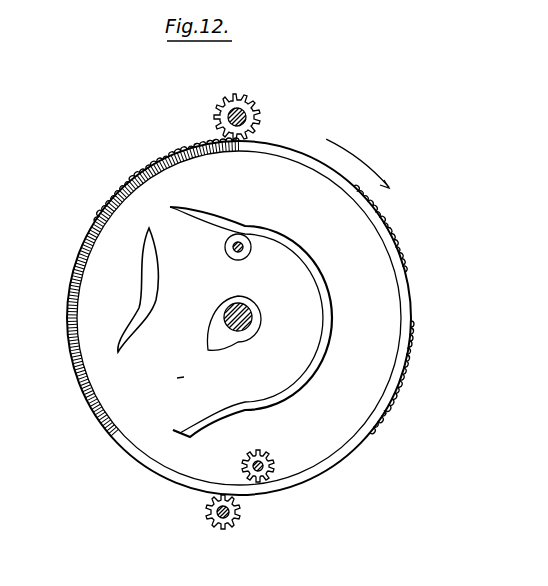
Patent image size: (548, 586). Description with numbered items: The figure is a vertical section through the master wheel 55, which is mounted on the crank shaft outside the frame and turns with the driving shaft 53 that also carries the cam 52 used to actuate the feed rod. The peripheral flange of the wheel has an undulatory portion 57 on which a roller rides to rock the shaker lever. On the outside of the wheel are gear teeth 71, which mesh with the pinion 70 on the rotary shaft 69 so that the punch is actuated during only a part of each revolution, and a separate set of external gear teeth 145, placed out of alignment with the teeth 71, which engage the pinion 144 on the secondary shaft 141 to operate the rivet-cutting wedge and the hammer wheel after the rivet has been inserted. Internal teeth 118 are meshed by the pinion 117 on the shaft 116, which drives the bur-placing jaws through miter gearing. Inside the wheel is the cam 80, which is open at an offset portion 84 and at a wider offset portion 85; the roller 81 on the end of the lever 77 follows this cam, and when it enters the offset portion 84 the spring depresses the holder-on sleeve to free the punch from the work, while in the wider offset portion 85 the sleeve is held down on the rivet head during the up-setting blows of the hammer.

The master wheel 55 is at (391, 298).
The undulatory portion 57 is at (75, 262).
The gear teeth 71 is at (133, 178).
The external gear teeth 145 is at (397, 243).
The internal teeth 118 is at (382, 391).
The pinion 70 is at (256, 105).
The rotary shaft 69 is at (228, 117).
The shaft 116 is at (266, 460).
The pinion 117 is at (243, 465).
The pinion 144 is at (233, 514).
The secondary shaft 141 is at (217, 517).
The cam 80 is at (324, 307).
The offset portion 84 is at (153, 290).
The offset portion 85 is at (166, 385).
The cam 52 is at (230, 345).
The driving shaft 53 is at (254, 313).
The roller 81 is at (246, 256).
The lever 77 is at (229, 249).